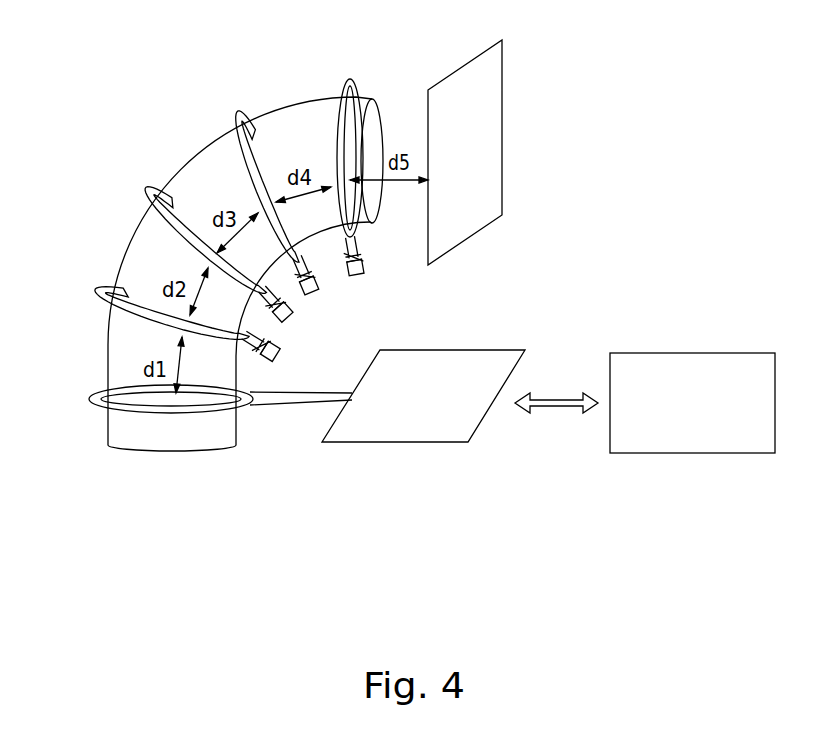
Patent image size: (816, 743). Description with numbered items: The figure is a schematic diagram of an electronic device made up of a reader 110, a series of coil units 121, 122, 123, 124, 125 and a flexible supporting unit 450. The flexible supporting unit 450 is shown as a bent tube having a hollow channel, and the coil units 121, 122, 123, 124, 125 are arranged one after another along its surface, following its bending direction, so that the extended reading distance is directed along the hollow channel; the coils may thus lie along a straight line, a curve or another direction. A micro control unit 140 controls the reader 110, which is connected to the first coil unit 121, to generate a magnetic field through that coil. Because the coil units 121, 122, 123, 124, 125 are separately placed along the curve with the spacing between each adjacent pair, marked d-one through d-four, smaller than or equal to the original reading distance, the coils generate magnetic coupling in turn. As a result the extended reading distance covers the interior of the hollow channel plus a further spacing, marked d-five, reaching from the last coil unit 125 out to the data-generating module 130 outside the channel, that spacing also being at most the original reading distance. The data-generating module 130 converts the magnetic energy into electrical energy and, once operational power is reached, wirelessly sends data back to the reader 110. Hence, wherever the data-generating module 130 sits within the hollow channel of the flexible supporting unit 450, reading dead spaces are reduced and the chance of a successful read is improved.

The reader 110 is at (395, 447).
The coil unit 121 is at (95, 393).
The coil unit 122 is at (100, 290).
The coil unit 123 is at (153, 187).
The coil unit 124 is at (238, 112).
The coil unit 125 is at (355, 78).
The data-generating module 130 is at (487, 172).
The micro control unit 140 is at (693, 455).
The flexible supporting unit 450 is at (172, 452).